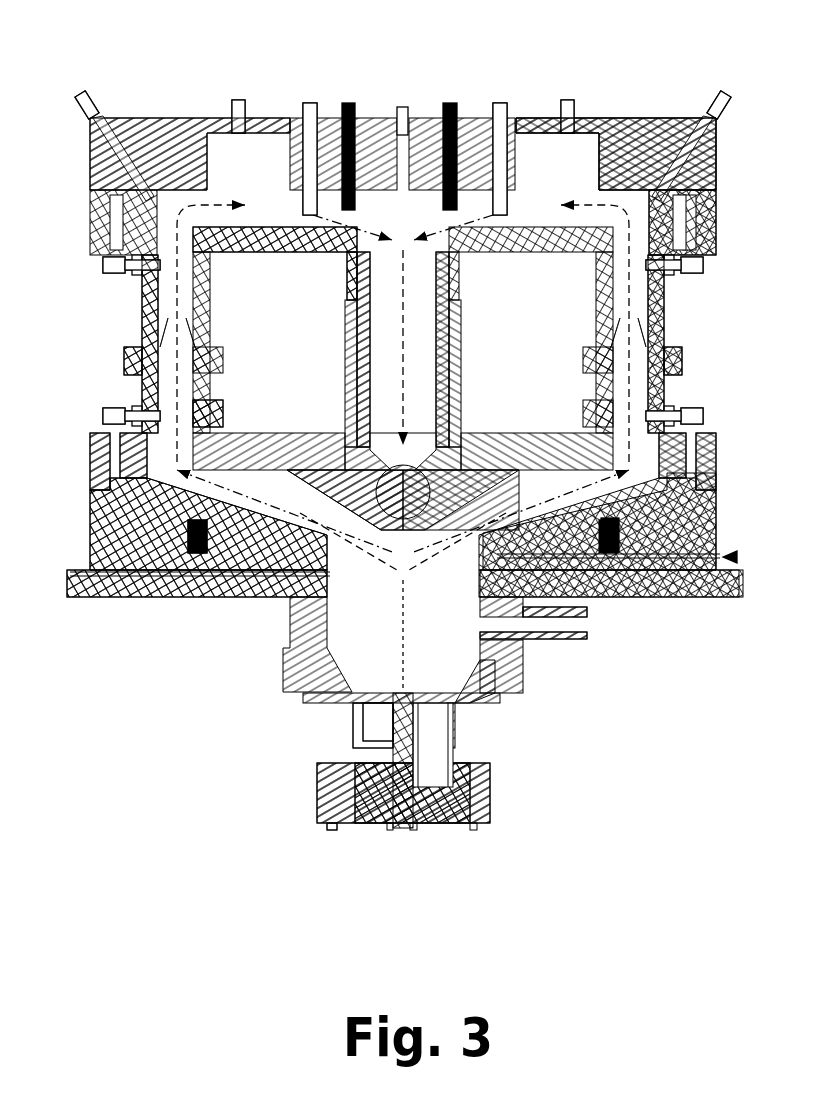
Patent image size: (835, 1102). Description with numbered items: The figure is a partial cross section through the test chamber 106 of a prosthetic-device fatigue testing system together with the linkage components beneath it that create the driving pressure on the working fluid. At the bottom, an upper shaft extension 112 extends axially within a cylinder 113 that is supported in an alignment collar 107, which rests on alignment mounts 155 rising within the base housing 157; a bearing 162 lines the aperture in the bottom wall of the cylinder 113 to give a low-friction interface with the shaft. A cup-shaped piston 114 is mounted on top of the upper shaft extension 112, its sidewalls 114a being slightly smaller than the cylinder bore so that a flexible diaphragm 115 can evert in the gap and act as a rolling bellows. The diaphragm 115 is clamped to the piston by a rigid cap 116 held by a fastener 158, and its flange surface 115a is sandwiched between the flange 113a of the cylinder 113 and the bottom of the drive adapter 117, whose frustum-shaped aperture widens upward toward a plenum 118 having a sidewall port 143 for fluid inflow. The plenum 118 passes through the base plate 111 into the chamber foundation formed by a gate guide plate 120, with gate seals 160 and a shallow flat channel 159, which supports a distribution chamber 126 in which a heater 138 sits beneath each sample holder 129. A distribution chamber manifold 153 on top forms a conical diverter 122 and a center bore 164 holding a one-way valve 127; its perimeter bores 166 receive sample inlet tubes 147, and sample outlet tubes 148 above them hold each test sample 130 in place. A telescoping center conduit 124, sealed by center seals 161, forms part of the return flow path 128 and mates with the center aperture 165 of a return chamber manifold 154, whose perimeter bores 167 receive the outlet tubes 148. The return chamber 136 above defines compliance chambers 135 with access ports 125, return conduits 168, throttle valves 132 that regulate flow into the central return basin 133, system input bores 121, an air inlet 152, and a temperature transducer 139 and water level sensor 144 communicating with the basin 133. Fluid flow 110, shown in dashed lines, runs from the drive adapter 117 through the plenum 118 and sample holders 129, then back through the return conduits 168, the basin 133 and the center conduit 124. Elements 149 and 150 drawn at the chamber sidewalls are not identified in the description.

The test chamber 106 is at (688, 118).
The alignment collar 107 is at (488, 800).
The fluid flow 110 is at (177, 386).
The base plate 111 is at (103, 595).
The upper shaft extension 112 is at (393, 765).
The cylinder 113 is at (470, 747).
The flange 113a is at (483, 700).
The piston 114 is at (380, 712).
The sidewalls 114a is at (363, 740).
The flexible diaphragm 115 is at (355, 712).
The flange surface 115a is at (450, 715).
The cap 116 is at (422, 692).
The drive adapter 117 is at (523, 680).
The plenum 118 is at (290, 628).
The gate guide plate 120 is at (92, 570).
The system input bores 121 is at (83, 96).
The conical diverter surface 122 is at (305, 485).
The center conduit 124 is at (455, 347).
The access port 125 is at (238, 100).
The distribution chamber 126 is at (92, 525).
The one-way valve 127 is at (398, 569).
The return flow path 128 is at (390, 378).
The sample holder 129 is at (126, 368).
The test sample 130 is at (200, 353).
The throttle valve 132 is at (310, 103).
The central return basin 133 is at (376, 212).
The compliance chambers 135 is at (216, 152).
The return chamber 136 is at (720, 185).
The heater 138 is at (197, 553).
The temperature transducer 139 is at (452, 103).
The sidewall port 143 is at (570, 623).
The water level sensor 144 is at (348, 103).
The sample inlet tube 147 is at (143, 378).
The sample outlet tube 148 is at (143, 296).
The lower bolt 149 is at (103, 417).
The upper bolt 150 is at (102, 272).
The air inlet 152 is at (405, 107).
The distribution chamber manifold 153 is at (717, 450).
The return chamber manifold 154 is at (92, 228).
The alignment mounts 155 is at (327, 826).
The base housing 157 is at (615, 553).
The fastener 158 is at (396, 692).
The shallow flat channel 159 is at (736, 556).
The gate seals 160 is at (332, 567).
The center seals 161 is at (455, 292).
The bearing 162 is at (418, 828).
The center bore 164 is at (422, 448).
The center aperture 165 is at (385, 258).
The perimeter bores 166 is at (164, 452).
The perimeter bores 167 is at (643, 236).
The return conduits 168 is at (168, 215).